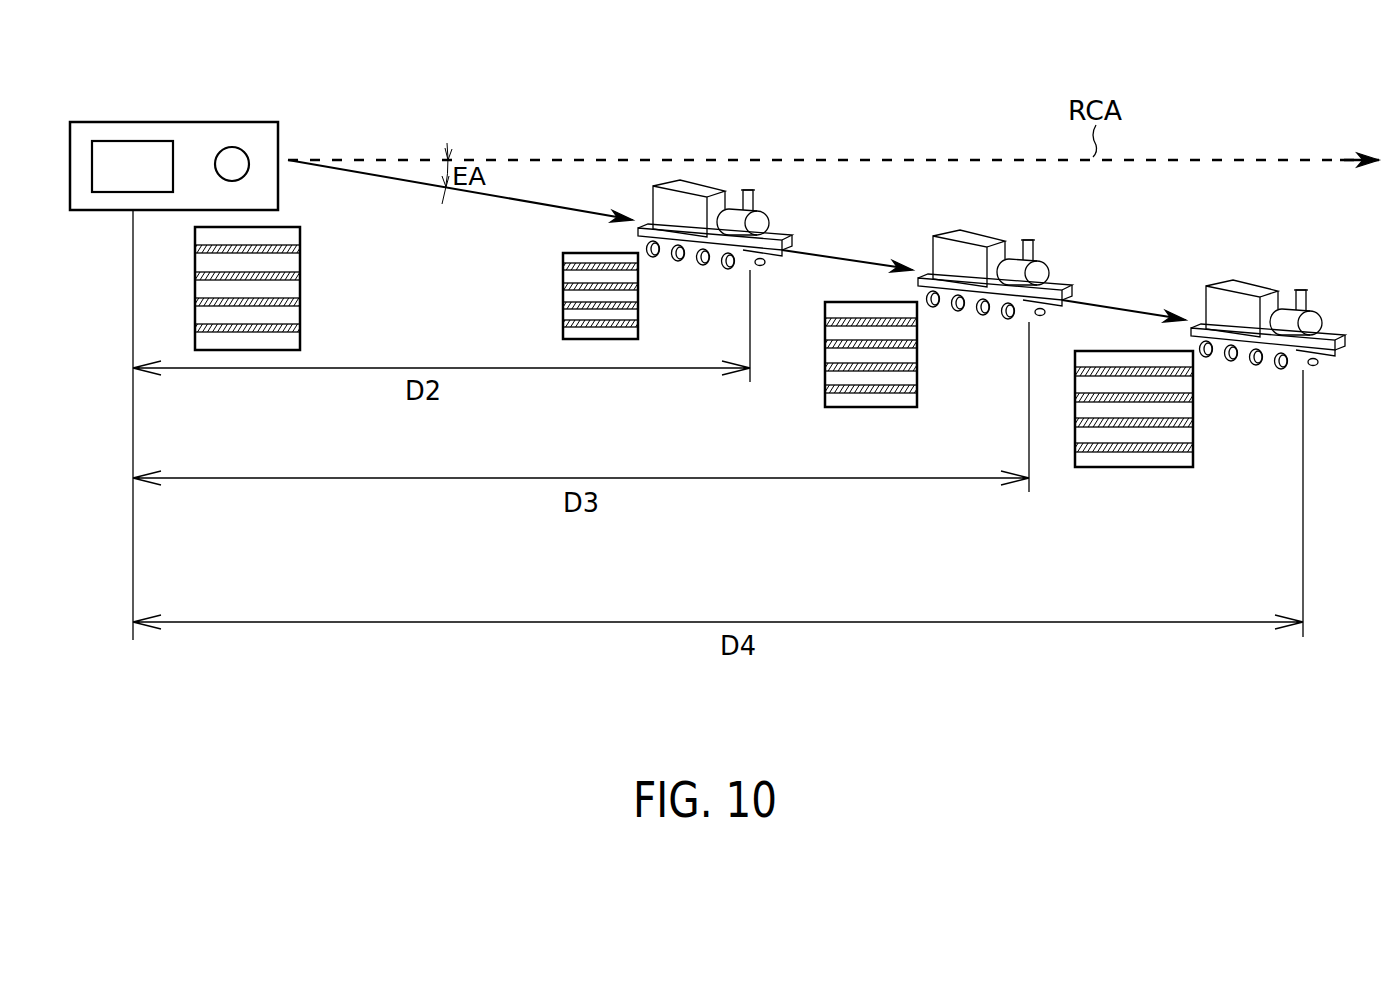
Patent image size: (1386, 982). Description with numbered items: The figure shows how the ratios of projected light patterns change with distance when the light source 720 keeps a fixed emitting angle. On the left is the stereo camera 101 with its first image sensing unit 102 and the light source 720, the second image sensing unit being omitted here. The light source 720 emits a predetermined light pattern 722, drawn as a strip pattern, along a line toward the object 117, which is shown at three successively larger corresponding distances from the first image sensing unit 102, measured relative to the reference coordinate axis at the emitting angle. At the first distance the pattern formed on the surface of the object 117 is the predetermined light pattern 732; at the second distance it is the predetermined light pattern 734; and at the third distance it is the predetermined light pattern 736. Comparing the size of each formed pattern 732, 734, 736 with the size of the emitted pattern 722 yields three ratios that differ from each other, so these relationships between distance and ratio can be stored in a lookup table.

The stereo camera 101 is at (171, 122).
The first image sensing unit 102 is at (118, 141).
The light source 720 is at (232, 147).
The object 117 is at (765, 203).
The predetermined light pattern 722 is at (300, 272).
The predetermined light pattern 732 is at (638, 308).
The predetermined light pattern 734 is at (917, 362).
The predetermined light pattern 736 is at (1193, 405).